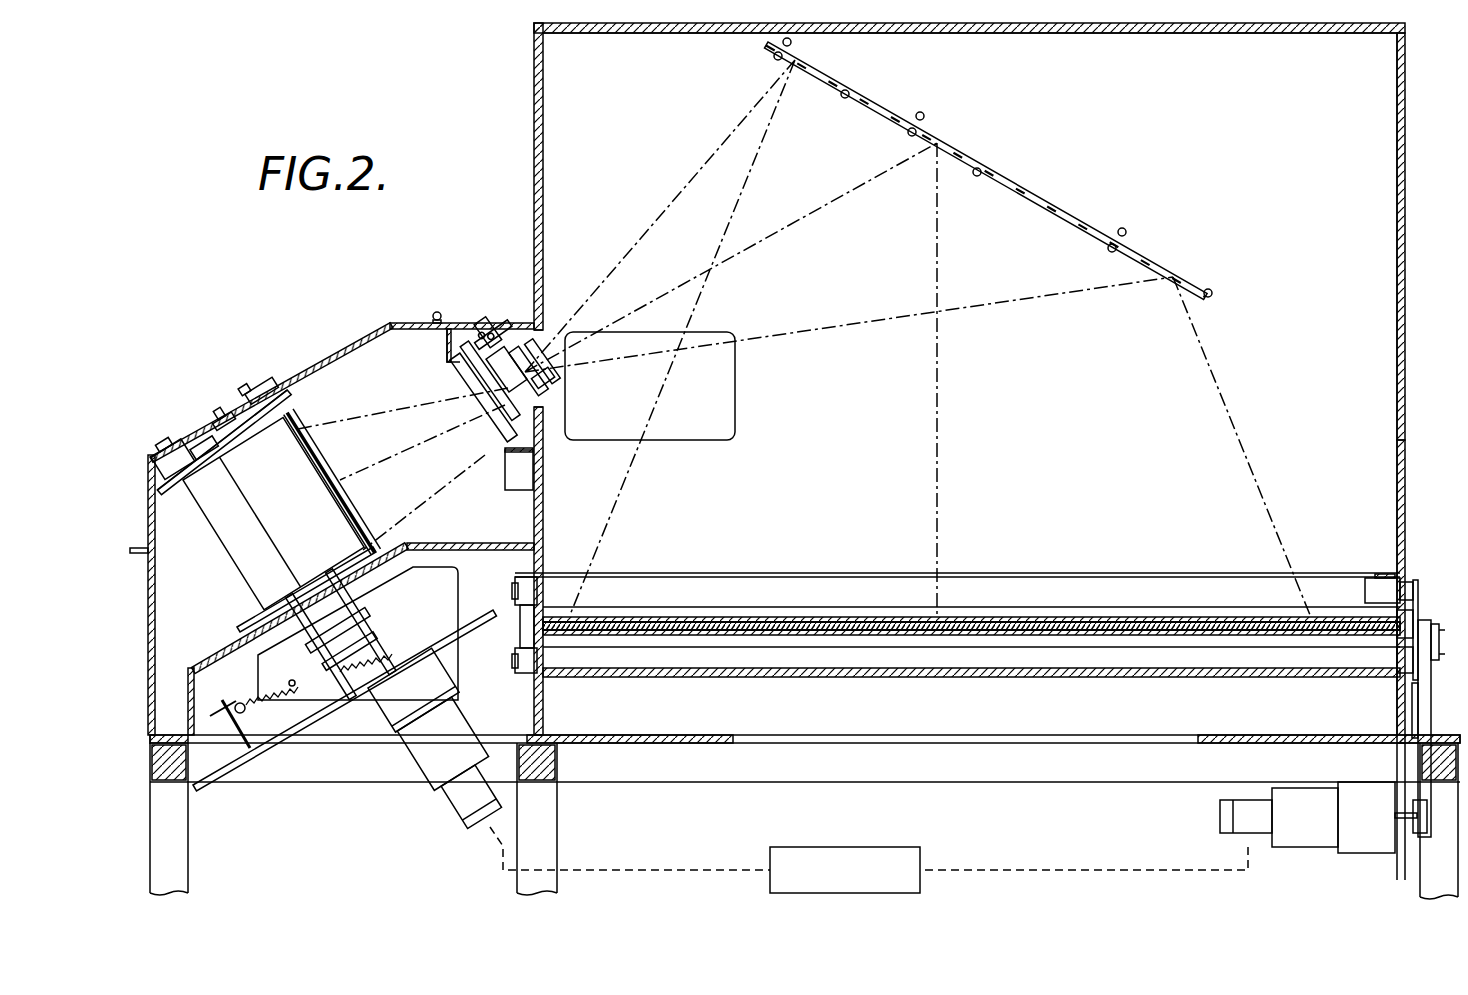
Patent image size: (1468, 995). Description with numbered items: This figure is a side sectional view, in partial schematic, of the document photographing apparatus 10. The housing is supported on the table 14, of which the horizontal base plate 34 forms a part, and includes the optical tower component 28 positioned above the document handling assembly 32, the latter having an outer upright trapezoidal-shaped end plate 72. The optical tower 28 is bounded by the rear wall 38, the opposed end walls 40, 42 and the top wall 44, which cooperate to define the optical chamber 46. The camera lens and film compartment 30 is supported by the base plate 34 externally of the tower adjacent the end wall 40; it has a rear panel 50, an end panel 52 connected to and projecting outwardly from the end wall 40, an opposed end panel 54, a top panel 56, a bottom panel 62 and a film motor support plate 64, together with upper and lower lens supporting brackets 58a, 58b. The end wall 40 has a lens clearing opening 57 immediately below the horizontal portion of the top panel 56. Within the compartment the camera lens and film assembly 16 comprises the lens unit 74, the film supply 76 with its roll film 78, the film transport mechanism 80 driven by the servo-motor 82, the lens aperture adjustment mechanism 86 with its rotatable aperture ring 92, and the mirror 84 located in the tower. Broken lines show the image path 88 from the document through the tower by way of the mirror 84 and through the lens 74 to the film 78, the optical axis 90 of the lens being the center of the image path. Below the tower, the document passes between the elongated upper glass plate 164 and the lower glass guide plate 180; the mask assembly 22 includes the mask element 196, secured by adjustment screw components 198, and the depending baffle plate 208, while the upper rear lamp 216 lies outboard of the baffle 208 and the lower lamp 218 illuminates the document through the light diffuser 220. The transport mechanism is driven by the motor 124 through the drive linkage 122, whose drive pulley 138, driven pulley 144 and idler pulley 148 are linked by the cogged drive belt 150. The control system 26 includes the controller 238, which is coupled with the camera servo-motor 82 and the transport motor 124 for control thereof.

The apparatus 10 is at (442, 245).
The table 14 is at (183, 870).
The camera lens and film assembly 16 is at (347, 383).
The mask assembly 22 is at (688, 562).
The control system 26 is at (932, 848).
The optical tower component 28 is at (1410, 268).
The camera lens and film compartment 30 is at (335, 340).
The document handling assembly 32 is at (1415, 525).
The horizontal base plate 34 is at (660, 730).
The rear wall 38 is at (1345, 200).
The end wall 40 is at (535, 160).
The end wall 42 is at (1405, 126).
The top wall 44 is at (1150, 36).
The optical chamber 46 is at (1124, 379).
The rear panel 50 is at (368, 352).
The end panel 52 is at (540, 540).
The end panel 54 is at (150, 612).
The top panel 56 is at (300, 375).
The lens clearing opening 57 is at (545, 330).
The upper lens supporting bracket 58a is at (450, 335).
The lower lens supporting bracket 58b is at (510, 470).
The bottom panel 62 is at (228, 645).
The film motor support plate 64 is at (240, 760).
The end plate 72 is at (1395, 562).
The lens unit 74 is at (468, 340).
The film supply 76 is at (250, 490).
The roll film 78 is at (330, 452).
The film transport mechanism 80 is at (398, 637).
The servo-motor 82 is at (440, 775).
The mirror 84 is at (1020, 177).
The lens aperture adjustment mechanism 86 is at (510, 335).
The image path 88 is at (657, 360).
The optical axis 90 is at (940, 478).
The rotatable aperture ring 92 is at (520, 420).
The drive linkage 122 is at (1435, 615).
The motor 124 is at (1295, 836).
The drive pulley 138 is at (1410, 830).
The driven pulley 144 is at (1435, 640).
The idler pulley 148 is at (1415, 755).
The cogged drive belt 150 is at (1423, 790).
The glass plate 164 is at (825, 612).
The lower glass guide plate 180 is at (975, 636).
The mask element 196 is at (950, 575).
The adjustment screw components 198 is at (820, 575).
The baffle plate 208 is at (1040, 600).
The upper rear lamp 216 is at (1375, 590).
The lower lamp 218 is at (1195, 662).
The light diffuser 220 is at (790, 632).
The controller 238 is at (815, 848).